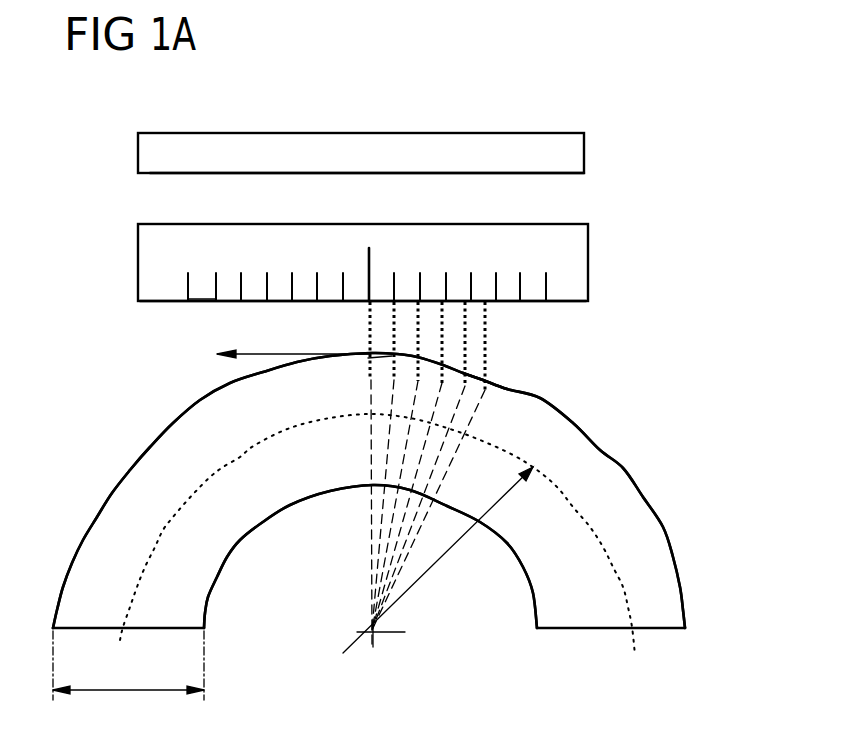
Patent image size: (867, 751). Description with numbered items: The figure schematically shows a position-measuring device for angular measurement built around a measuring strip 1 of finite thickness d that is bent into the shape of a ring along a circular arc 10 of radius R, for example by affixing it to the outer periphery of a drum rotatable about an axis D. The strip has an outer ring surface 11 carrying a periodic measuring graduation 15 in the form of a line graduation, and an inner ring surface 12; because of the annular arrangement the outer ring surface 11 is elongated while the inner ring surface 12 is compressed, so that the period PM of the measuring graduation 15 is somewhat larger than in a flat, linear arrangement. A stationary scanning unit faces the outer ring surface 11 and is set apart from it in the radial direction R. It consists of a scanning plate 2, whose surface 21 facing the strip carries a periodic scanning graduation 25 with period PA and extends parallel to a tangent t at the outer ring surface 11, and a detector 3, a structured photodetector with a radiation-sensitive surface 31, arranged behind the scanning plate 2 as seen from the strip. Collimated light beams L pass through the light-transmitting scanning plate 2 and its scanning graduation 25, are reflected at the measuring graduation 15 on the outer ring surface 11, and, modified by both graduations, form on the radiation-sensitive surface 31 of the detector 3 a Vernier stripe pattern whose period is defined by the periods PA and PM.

The measuring strip 1 is at (663, 531).
The circular arc 10 is at (620, 560).
The outer ring surface 11 is at (623, 468).
The inner ring surface 12 is at (263, 527).
The periodic measuring graduation 15 is at (486, 389).
The scanning plate 2 is at (588, 262).
The surface of scanning plate 21 is at (165, 303).
The periodic scanning graduation 25 is at (548, 285).
The detector 3 is at (585, 152).
The radiation-sensitive surface 31 is at (487, 175).
The light beams L is at (490, 320).
The radius R is at (447, 557).
The axis D is at (373, 630).
The thickness d is at (128, 665).
The tangent t is at (293, 340).
The period of scanning graduation PA is at (203, 297).
The period of measuring graduation PM is at (390, 357).